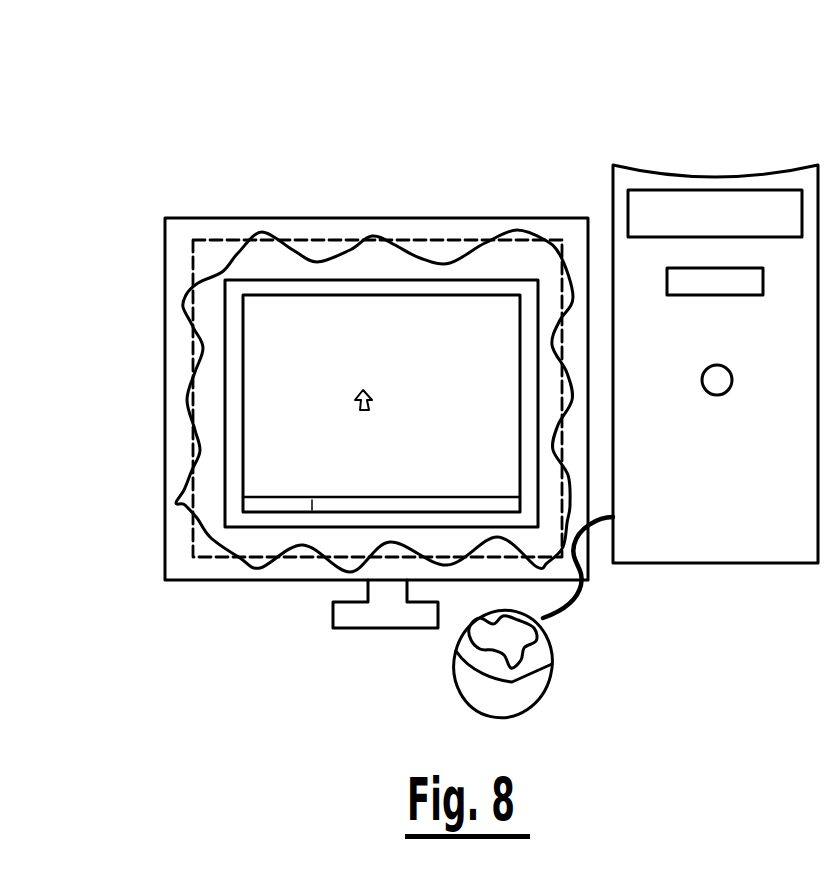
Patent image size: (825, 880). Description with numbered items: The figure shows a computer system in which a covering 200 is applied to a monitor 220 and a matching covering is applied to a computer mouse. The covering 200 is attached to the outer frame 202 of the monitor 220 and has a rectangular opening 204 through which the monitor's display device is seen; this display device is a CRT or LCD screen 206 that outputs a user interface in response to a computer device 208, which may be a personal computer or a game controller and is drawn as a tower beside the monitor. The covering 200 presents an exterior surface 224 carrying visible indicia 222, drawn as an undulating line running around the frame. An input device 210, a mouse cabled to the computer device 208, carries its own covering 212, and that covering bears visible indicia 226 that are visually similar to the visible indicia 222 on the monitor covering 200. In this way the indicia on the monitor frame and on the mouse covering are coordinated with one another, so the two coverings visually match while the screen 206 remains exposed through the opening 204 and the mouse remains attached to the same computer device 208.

The covering 200 is at (233, 237).
The outer frame 202 is at (347, 285).
The rectangular opening 204 is at (472, 277).
The CRT or LCD screen 206 is at (299, 366).
The computer device 208 is at (710, 177).
The input device 210 is at (557, 647).
The covering of input device 212 is at (457, 653).
The monitor 220 is at (187, 165).
The visible indicia 222 is at (176, 503).
The exterior surface 224 is at (188, 569).
The visible indicia on input device covering 226 is at (548, 675).